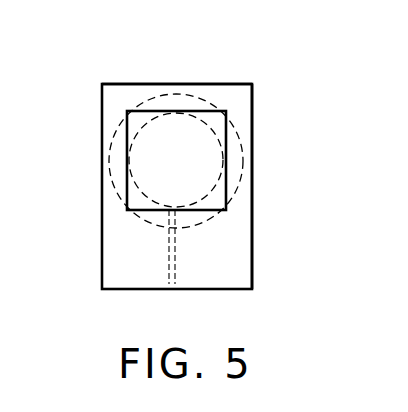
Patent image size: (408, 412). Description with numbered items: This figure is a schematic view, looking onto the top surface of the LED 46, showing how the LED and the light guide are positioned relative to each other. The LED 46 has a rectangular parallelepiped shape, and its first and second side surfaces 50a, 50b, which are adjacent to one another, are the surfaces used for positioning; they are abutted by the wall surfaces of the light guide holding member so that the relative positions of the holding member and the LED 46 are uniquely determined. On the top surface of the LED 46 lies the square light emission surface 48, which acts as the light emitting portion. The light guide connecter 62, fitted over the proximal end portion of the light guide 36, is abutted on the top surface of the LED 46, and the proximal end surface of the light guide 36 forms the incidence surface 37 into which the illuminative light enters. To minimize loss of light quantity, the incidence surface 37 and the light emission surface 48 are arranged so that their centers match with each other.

The light guide 36 is at (127, 117).
The incidence surface 37 is at (166, 135).
The light guide connecter 62 is at (186, 96).
The second side surface 50b is at (212, 84).
The first side surface 50a is at (252, 100).
The light emission surface 48 is at (226, 137).
The LED 46 is at (254, 228).